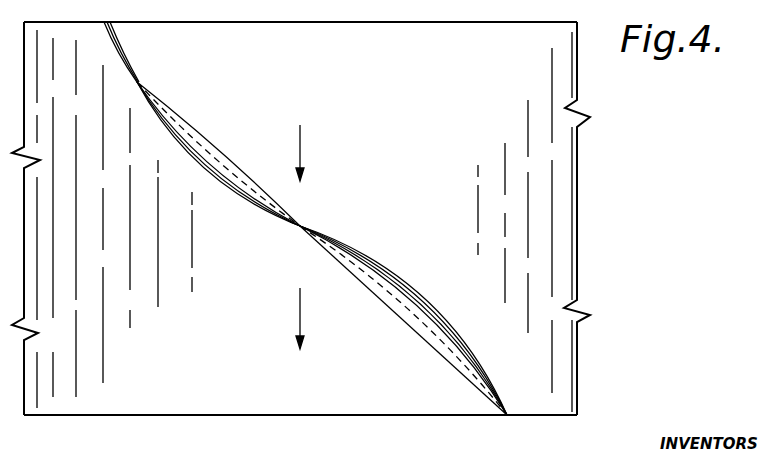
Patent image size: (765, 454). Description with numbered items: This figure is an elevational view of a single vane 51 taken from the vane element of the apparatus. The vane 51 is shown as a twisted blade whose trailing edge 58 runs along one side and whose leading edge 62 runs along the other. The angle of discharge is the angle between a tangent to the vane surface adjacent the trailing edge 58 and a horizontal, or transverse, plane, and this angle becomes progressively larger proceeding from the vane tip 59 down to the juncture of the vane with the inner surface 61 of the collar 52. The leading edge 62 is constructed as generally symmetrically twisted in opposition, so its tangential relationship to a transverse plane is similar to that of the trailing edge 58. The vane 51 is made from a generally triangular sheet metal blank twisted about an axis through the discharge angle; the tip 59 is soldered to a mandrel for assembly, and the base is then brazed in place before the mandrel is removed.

The vane 51 is at (385, 285).
The collar 52 is at (232, 415).
The trailing edge 58 is at (428, 300).
The vane tip 59 is at (300, 227).
The inner surface of collar 61 is at (244, 301).
The leading edge 62 is at (137, 82).